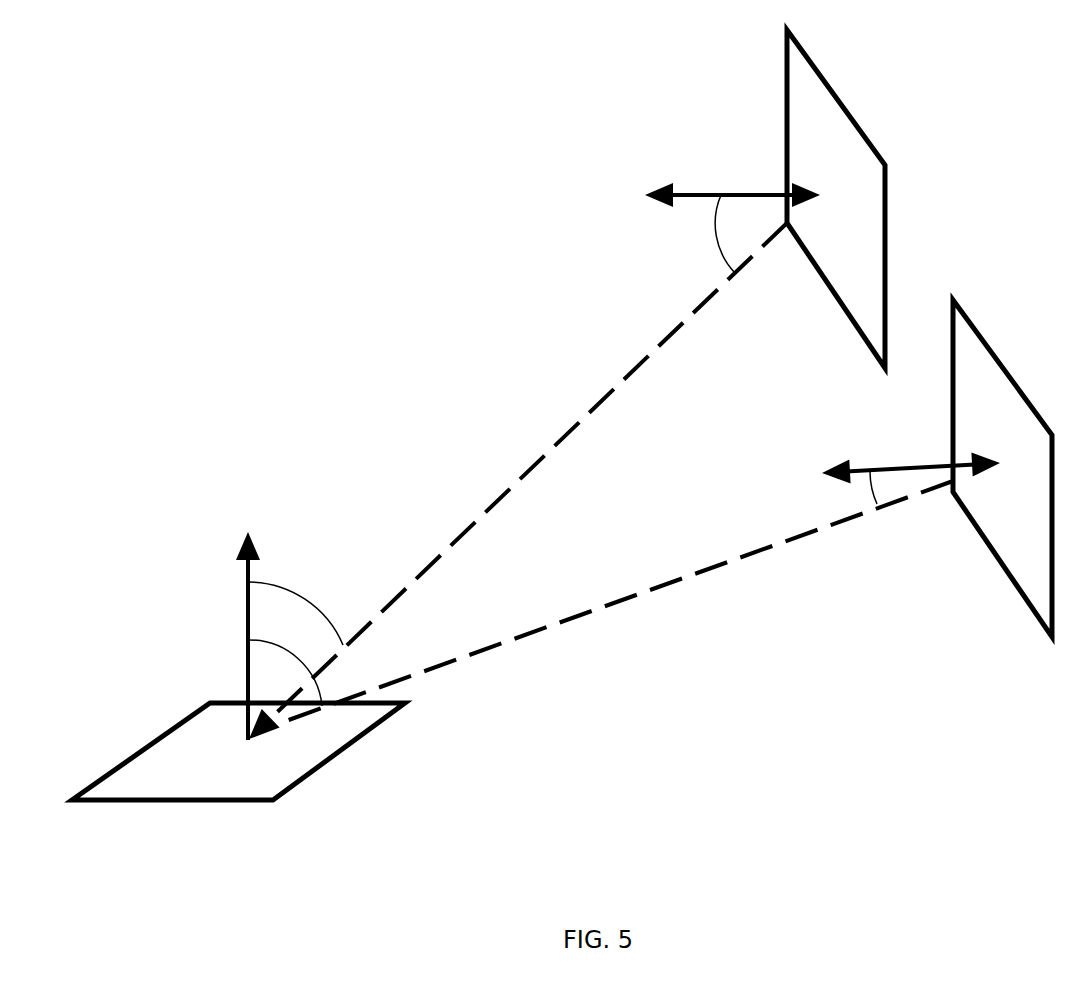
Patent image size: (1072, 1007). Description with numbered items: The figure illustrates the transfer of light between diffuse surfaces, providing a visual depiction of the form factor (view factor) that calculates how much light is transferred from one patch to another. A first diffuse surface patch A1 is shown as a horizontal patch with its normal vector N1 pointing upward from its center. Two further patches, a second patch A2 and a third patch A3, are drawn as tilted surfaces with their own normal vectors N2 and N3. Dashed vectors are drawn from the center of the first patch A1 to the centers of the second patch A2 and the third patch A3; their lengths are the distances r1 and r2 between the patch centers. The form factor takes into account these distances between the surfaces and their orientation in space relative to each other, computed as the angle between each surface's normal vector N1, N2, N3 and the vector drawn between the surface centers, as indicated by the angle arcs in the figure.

The first diffuse surface patch A1 is at (238, 789).
The second diffuse surface patch A2 is at (840, 199).
The third diffuse surface patch A3 is at (1009, 468).
The normal vector of first patch N1 is at (225, 636).
The normal vector of second patch N2 is at (732, 171).
The normal vector of third patch N3 is at (911, 448).
The distance between first and second patch centers r1 is at (518, 481).
The distance between first and third patch centers r2 is at (612, 603).